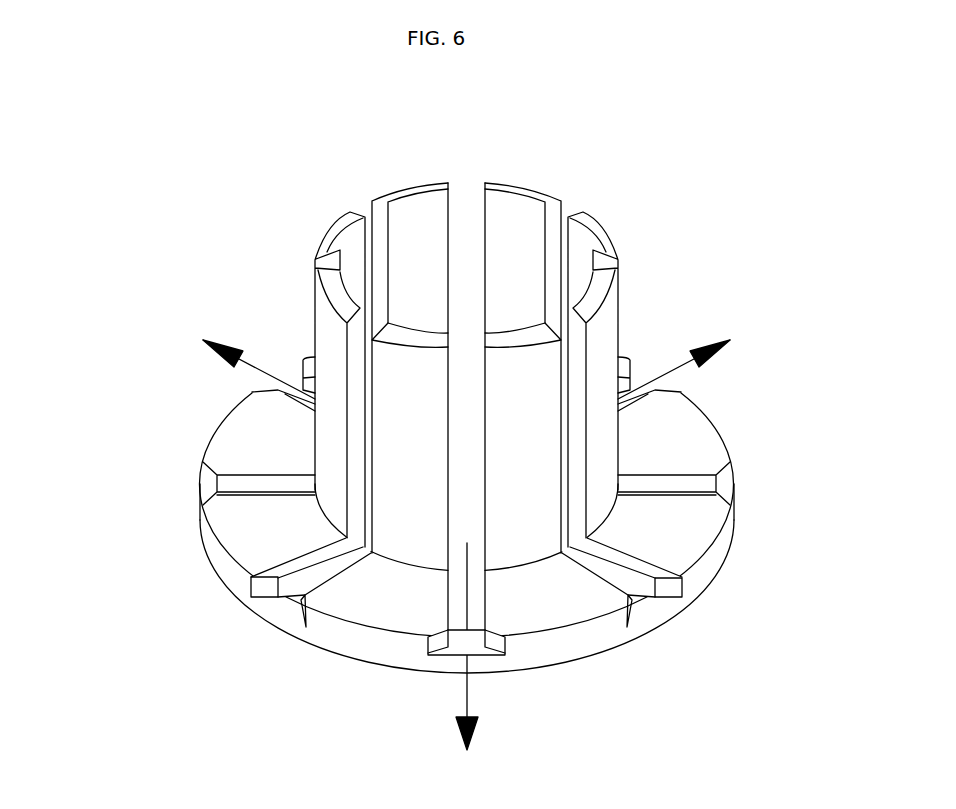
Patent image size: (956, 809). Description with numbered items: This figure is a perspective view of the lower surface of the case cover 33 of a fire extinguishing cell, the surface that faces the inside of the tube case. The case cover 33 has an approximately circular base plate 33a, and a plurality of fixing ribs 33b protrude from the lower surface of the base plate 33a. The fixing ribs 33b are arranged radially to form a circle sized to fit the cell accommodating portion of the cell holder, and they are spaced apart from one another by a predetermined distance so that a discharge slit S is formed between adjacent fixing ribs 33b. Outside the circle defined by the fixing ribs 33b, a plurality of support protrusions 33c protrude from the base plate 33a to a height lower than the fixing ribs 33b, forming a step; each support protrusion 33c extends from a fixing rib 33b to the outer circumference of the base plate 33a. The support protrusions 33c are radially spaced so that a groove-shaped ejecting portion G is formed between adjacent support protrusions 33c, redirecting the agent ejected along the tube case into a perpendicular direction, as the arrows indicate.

The case cover 33 is at (437, 416).
The base plate 33a is at (470, 417).
The fixing ribs 33b is at (600, 470).
The support protrusions 33c is at (243, 542).
The ejecting portion G is at (297, 588).
The discharge slit S is at (470, 505).